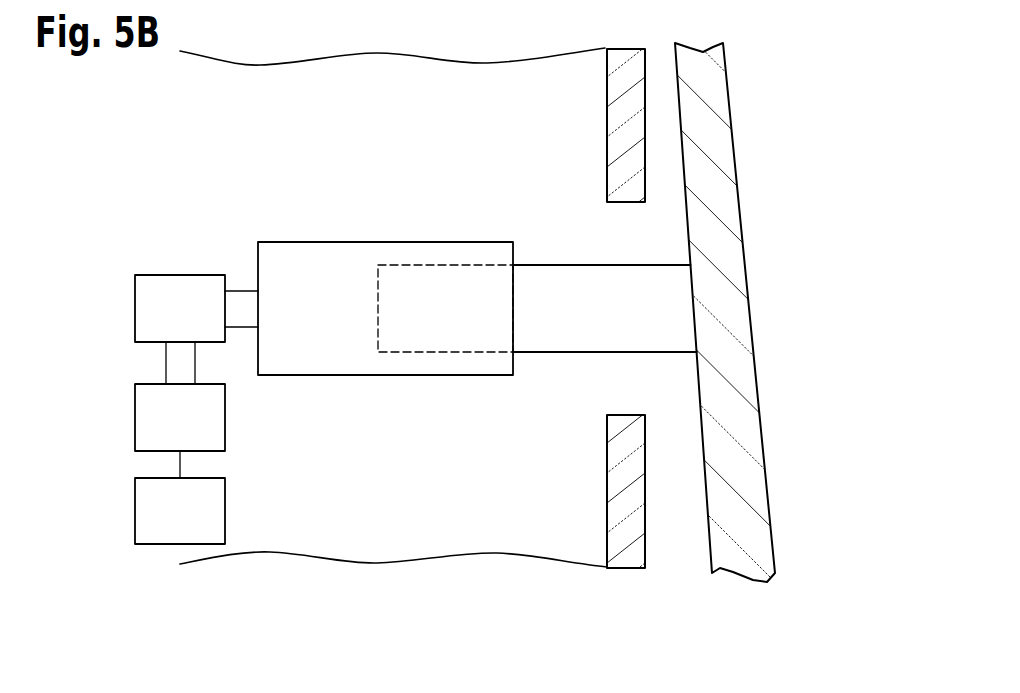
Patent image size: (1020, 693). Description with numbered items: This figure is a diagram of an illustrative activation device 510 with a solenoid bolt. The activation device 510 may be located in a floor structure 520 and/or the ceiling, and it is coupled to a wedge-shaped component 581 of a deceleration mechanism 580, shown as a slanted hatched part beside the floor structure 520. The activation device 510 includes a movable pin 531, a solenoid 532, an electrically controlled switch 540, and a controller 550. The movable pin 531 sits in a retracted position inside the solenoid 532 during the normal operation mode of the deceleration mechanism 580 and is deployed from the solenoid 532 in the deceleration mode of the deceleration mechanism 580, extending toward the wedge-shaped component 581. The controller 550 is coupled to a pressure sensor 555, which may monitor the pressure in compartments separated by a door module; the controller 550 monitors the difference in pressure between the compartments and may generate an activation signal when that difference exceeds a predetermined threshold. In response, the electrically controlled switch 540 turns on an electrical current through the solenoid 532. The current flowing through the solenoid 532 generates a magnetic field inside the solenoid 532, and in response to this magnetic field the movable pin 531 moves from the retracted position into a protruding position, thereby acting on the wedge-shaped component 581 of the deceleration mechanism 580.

The activation device 510 is at (251, 212).
The floor structure 520 is at (345, 535).
The movable pin 531 is at (543, 284).
The solenoid 532 is at (307, 292).
The electrically controlled switch 540 is at (157, 323).
The controller 550 is at (157, 431).
The pressure sensor 555 is at (157, 524).
The deceleration mechanism 580 is at (777, 590).
The wedge-shaped component 581 is at (753, 488).